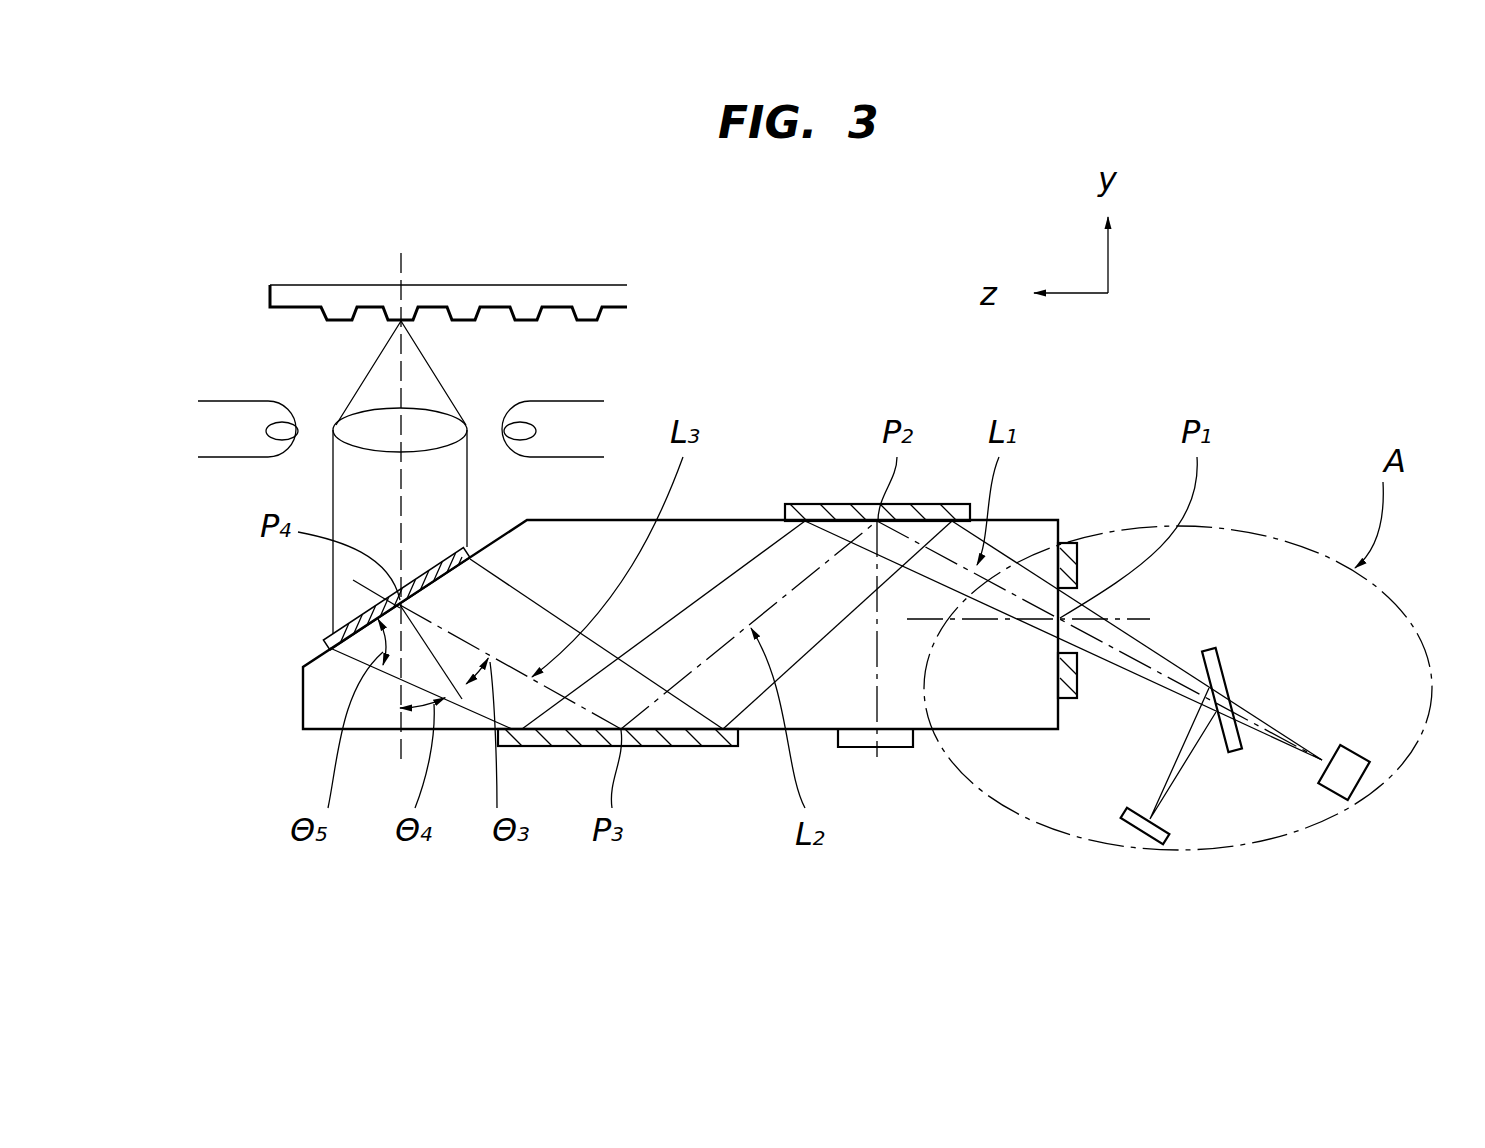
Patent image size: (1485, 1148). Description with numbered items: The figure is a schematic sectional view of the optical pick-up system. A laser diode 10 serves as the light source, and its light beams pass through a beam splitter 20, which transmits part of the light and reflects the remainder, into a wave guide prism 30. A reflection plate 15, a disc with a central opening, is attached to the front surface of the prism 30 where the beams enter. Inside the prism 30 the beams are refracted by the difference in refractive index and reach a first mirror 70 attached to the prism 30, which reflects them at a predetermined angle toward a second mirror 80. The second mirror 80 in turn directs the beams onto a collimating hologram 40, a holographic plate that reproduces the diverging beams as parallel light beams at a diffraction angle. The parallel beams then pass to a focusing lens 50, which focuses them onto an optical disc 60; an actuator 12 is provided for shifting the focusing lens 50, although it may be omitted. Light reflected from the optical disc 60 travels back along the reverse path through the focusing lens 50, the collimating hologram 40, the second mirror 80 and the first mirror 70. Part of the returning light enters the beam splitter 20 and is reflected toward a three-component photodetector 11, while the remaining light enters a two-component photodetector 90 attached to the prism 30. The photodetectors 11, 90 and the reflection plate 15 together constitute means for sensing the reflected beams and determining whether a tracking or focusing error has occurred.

The laser diode 10 is at (1345, 790).
The three-component photodetector 11 is at (1140, 826).
The actuator 12 is at (226, 458).
The reflection plate 15 is at (1078, 565).
The beam splitter 20 is at (1217, 667).
The prism 30 is at (298, 694).
The collimating hologram 40 is at (358, 620).
The focusing lens 50 is at (430, 424).
The optical disc 60 is at (358, 287).
The first mirror 70 is at (830, 504).
The second mirror 80 is at (698, 748).
The two-component photodetector 90 is at (881, 748).